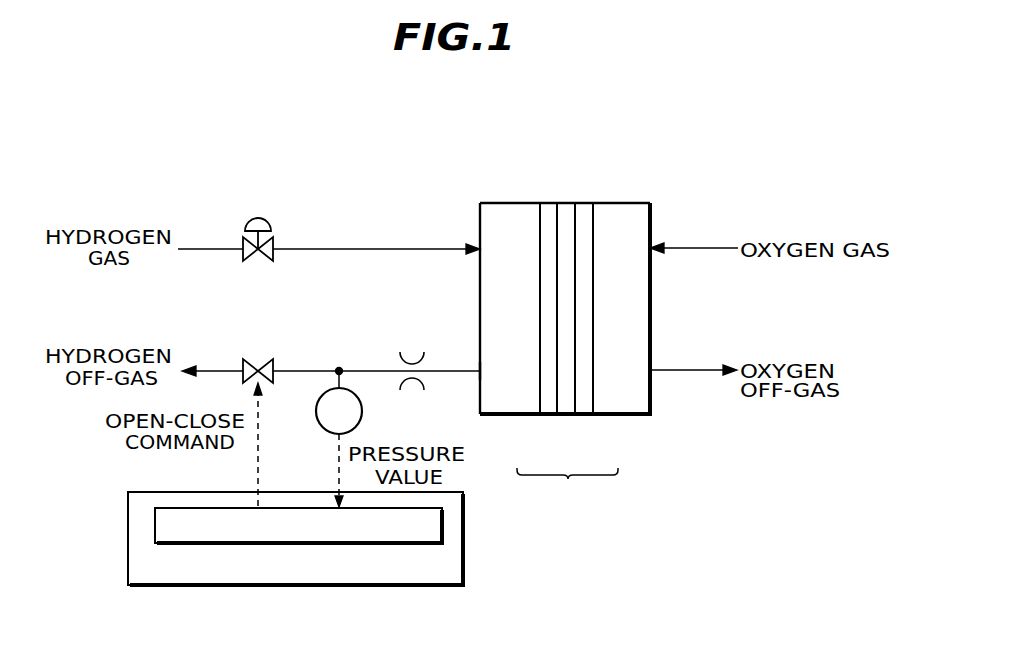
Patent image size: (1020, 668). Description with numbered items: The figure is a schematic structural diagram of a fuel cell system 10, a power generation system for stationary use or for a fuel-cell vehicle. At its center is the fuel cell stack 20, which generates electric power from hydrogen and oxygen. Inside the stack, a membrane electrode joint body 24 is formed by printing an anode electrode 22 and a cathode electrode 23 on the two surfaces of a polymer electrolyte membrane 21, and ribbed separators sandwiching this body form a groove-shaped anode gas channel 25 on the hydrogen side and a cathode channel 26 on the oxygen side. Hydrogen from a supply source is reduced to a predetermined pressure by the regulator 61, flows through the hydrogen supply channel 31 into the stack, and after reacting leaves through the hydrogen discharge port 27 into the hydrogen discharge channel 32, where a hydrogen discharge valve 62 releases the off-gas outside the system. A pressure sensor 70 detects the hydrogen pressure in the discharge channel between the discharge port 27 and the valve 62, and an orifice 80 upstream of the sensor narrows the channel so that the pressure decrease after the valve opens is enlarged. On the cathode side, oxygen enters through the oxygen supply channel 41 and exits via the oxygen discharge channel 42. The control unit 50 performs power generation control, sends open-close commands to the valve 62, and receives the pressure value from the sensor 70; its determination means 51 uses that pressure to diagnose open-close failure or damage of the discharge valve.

The fuel cell system 10 is at (448, 162).
The fuel cell stack 20 is at (614, 192).
The polymer electrolyte membrane 21 is at (565, 407).
The anode electrode 22 is at (549, 407).
The cathode electrode 23 is at (583, 407).
The membrane electrode joint body 24 is at (567, 485).
The anode gas channel 25 is at (508, 407).
The cathode channel 26 is at (622, 407).
The hydrogen discharge port 27 is at (478, 373).
The hydrogen supply channel 31 is at (383, 248).
The hydrogen discharge channel 32 is at (378, 368).
The oxygen supply channel 41 is at (690, 247).
The oxygen discharge channel 42 is at (690, 368).
The control unit 50 is at (463, 572).
The determination means 51 is at (443, 530).
The regulator 61 is at (259, 218).
The hydrogen discharge valve 62 is at (258, 359).
The pressure sensor 70 is at (362, 424).
The orifice 80 is at (413, 362).